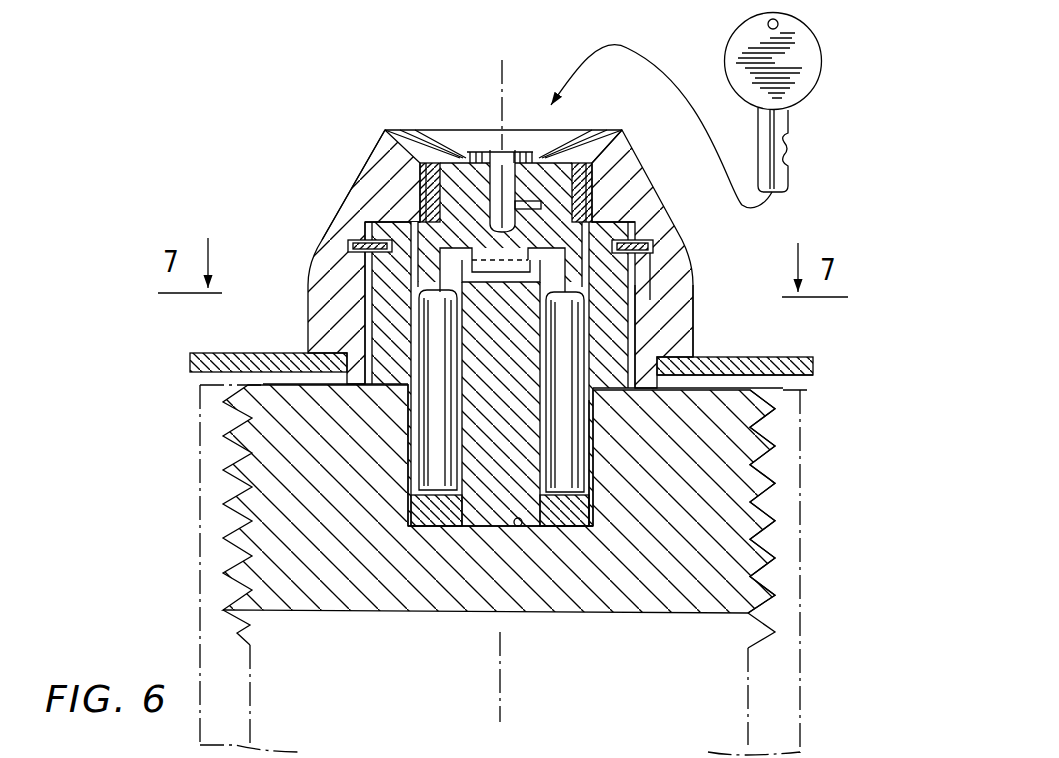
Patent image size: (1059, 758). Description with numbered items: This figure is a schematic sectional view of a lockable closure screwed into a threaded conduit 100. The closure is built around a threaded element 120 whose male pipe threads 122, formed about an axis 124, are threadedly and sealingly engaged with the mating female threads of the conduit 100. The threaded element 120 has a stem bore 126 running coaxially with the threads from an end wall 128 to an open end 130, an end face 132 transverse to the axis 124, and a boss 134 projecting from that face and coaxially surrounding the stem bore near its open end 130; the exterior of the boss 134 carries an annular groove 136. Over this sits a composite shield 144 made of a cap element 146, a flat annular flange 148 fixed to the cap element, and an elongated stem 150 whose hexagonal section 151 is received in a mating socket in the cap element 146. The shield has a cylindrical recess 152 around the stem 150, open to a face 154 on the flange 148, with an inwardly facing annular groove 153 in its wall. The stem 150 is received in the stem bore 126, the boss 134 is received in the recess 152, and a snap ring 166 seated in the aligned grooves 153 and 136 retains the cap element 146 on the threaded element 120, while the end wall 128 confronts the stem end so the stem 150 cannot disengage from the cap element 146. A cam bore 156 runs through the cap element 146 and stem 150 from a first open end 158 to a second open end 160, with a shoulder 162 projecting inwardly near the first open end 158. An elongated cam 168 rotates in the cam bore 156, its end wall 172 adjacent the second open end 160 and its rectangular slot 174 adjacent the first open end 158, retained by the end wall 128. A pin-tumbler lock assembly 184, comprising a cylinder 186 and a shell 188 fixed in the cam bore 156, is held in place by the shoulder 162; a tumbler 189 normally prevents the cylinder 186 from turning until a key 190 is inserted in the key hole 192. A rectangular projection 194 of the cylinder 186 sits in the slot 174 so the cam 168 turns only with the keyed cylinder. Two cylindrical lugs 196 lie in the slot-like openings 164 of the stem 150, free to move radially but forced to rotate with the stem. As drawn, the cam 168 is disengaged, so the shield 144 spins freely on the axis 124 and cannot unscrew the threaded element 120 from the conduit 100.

The threaded conduit 100 is at (797, 682).
The threaded element 120 is at (354, 616).
The male pipe threads 122 is at (767, 518).
The axis 124 is at (498, 82).
The stem bore 126 is at (598, 504).
The end wall 128 is at (560, 528).
The open end 130 is at (588, 212).
The end face 132 is at (263, 383).
The boss 134 is at (693, 340).
The annular groove 136 is at (600, 224).
The composite shield 144 is at (326, 221).
The cap element 146 is at (372, 166).
The flat annular flange 148 is at (797, 357).
The elongated stem 150 is at (402, 263).
The hexagonal section 151 is at (420, 194).
The cylindrical recess 152 is at (640, 295).
The annular groove 153 is at (655, 247).
The face 154 is at (813, 376).
The cam bore 156 is at (415, 290).
The first open end 158 is at (458, 155).
The second open end 160 is at (446, 513).
The shoulder 162 is at (457, 155).
The slot-like openings 164 is at (413, 497).
The snap ring 166 is at (652, 262).
The elongated cam 168 is at (476, 535).
The end wall 172 is at (521, 530).
The rectangular slot 174 is at (537, 278).
The pin-tumbler lock assembly 184 is at (528, 140).
The cylinder 186 is at (522, 172).
The shell 188 is at (562, 160).
The tumbler 189 is at (578, 176).
The key 190 is at (810, 82).
The key hole 192 is at (463, 152).
The rectangular projection 194 is at (493, 278).
The cylindrical lugs 196 is at (437, 403).